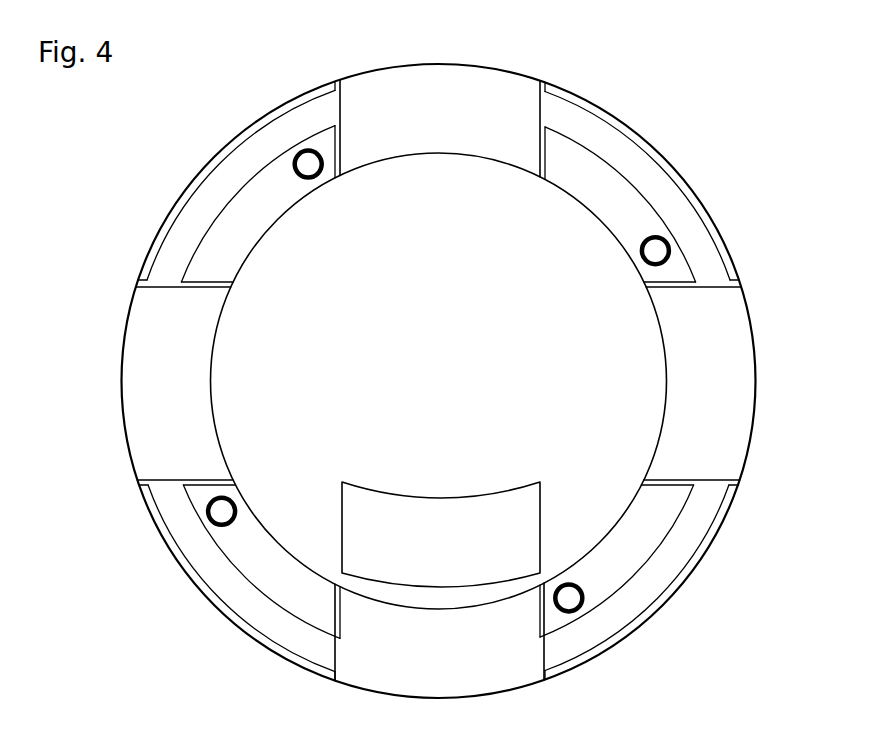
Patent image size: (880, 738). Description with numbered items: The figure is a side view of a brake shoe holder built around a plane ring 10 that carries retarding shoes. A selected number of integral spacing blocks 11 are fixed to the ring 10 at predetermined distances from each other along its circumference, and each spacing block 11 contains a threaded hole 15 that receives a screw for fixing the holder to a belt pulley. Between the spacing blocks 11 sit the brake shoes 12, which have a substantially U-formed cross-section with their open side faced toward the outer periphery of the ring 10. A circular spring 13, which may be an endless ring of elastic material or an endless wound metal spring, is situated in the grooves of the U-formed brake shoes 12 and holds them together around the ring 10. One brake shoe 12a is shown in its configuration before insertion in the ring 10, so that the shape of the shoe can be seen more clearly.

The plane ring 10 is at (715, 532).
The spacing blocks 11 is at (606, 200).
The brake shoes 12 is at (432, 143).
The brake shoe 12a is at (438, 512).
The circular spring 13 is at (585, 125).
The threaded holes 15 is at (668, 248).